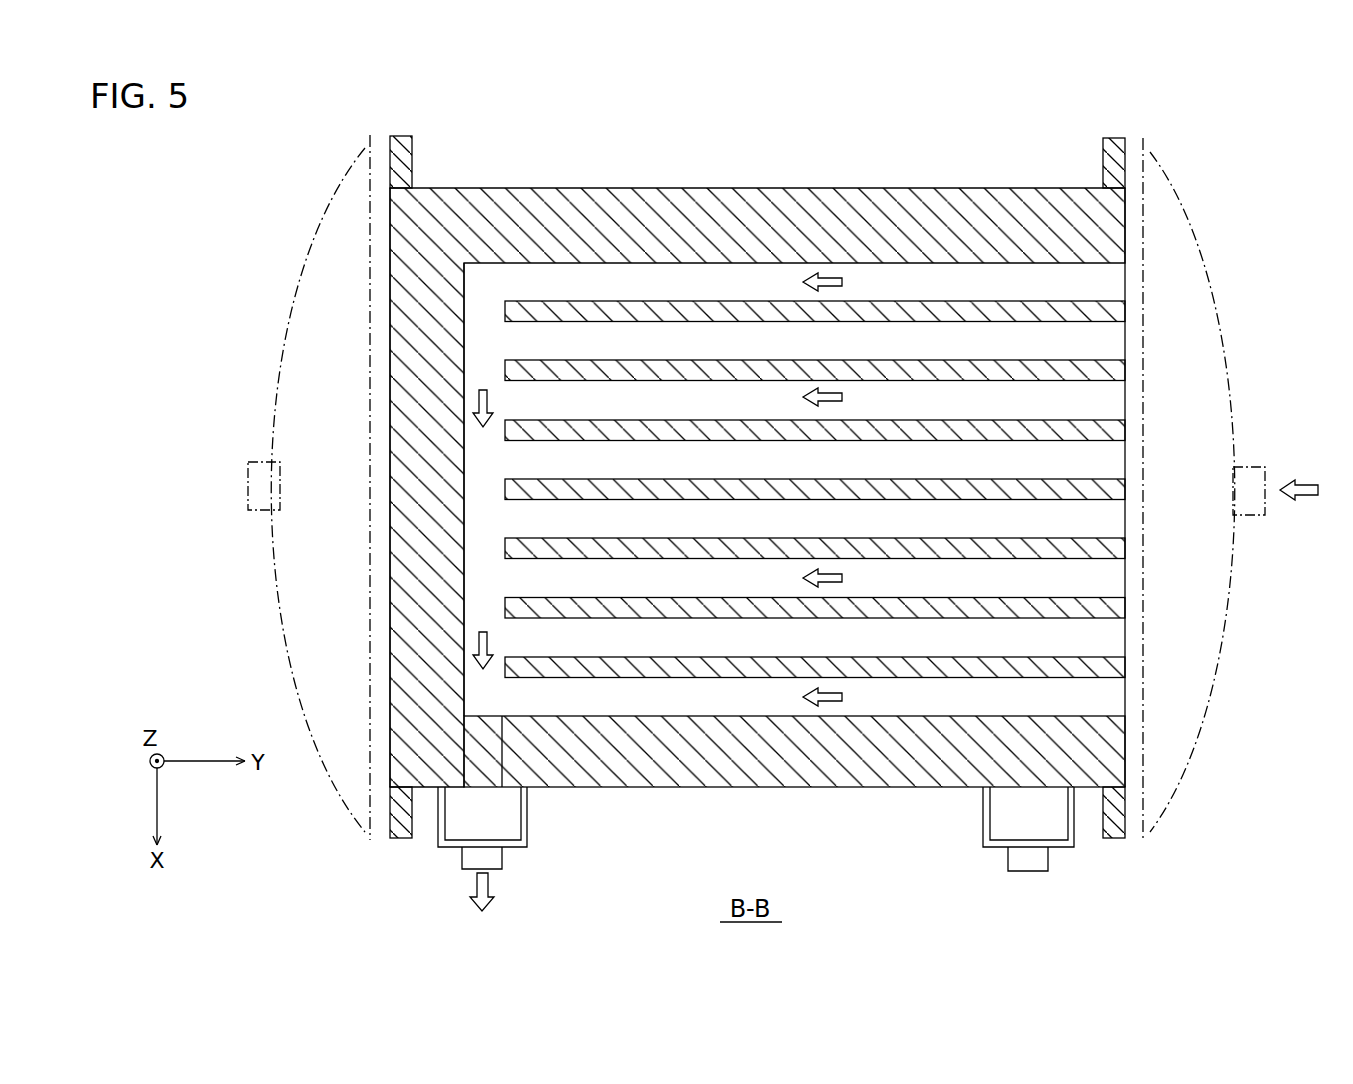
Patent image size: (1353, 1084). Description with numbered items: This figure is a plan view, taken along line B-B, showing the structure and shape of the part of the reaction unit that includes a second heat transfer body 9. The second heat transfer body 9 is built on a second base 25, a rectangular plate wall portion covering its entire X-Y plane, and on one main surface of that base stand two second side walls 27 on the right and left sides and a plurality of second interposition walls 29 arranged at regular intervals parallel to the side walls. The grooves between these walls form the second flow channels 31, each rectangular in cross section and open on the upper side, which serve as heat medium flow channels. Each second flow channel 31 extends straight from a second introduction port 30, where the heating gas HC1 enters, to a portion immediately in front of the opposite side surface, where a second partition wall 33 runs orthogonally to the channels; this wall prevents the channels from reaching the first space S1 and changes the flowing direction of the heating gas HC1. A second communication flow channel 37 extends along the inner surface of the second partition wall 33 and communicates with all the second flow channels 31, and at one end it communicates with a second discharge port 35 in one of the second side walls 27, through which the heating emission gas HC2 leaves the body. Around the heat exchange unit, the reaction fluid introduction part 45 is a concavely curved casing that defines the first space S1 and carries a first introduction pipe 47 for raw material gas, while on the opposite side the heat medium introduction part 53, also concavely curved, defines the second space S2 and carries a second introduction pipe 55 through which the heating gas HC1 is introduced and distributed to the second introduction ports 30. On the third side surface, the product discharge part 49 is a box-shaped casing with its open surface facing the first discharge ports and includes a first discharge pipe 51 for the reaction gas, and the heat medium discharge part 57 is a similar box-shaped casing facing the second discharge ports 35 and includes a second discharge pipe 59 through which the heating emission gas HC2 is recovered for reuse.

The second heat transfer body 9 is at (848, 188).
The second base 25 is at (1118, 464).
The second side wall 27 is at (615, 196).
The second interposition wall 29 is at (715, 302).
The second introduction port 30 is at (1125, 580).
The second flow channel 31 is at (676, 400).
The second partition wall 33 is at (400, 577).
The second discharge port 35 is at (498, 745).
The second communication flow channel 37 is at (478, 517).
The reaction fluid introduction part 45 is at (318, 237).
The first introduction pipe 47 is at (260, 462).
The product discharge part 49 is at (983, 818).
The first discharge pipe 51 is at (1008, 862).
The heat medium introduction part 53 is at (1195, 240).
The second introduction pipe 55 is at (1250, 467).
The heat medium discharge part 57 is at (527, 808).
The second discharge pipe 59 is at (502, 858).
The first space S1 is at (312, 543).
The second space S2 is at (1195, 612).
The heating gas HC1 is at (1303, 484).
The heating emission gas HC2 is at (470, 880).